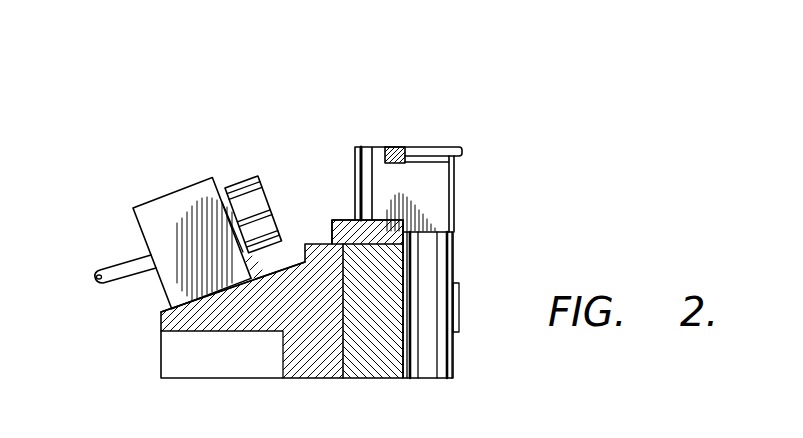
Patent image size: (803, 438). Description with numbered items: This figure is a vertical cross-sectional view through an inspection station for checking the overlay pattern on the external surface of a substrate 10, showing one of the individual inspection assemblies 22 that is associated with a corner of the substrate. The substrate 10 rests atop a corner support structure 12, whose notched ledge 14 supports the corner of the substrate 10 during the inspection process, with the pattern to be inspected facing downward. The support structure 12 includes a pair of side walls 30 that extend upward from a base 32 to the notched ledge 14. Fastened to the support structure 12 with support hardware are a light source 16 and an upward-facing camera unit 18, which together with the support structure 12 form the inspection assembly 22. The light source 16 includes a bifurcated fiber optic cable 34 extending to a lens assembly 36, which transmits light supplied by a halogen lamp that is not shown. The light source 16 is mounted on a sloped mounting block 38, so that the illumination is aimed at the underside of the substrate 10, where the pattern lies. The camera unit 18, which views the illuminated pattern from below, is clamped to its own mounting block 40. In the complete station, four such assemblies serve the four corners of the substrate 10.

The substrate 10 is at (435, 147).
The corner support structure 12 is at (361, 147).
The notched ledge 14 is at (398, 157).
The light source 16 is at (157, 189).
The camera unit 18 is at (453, 262).
The inspection assembly 22 is at (140, 333).
The side wall 30 is at (422, 188).
The base 32 is at (332, 220).
The bifurcated fiber optic cable 34 is at (120, 260).
The lens assembly 36 is at (248, 178).
The sloped mounting block 38 is at (295, 262).
The mounting block 40 is at (403, 340).